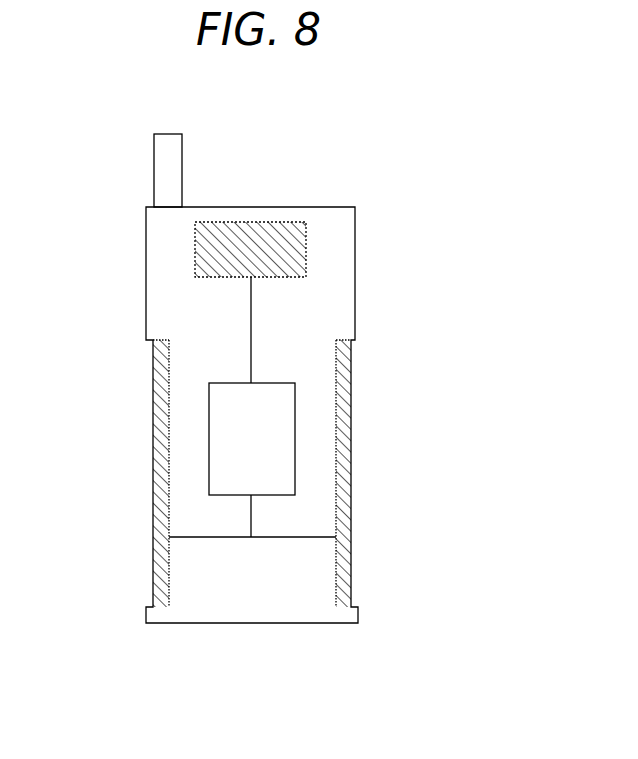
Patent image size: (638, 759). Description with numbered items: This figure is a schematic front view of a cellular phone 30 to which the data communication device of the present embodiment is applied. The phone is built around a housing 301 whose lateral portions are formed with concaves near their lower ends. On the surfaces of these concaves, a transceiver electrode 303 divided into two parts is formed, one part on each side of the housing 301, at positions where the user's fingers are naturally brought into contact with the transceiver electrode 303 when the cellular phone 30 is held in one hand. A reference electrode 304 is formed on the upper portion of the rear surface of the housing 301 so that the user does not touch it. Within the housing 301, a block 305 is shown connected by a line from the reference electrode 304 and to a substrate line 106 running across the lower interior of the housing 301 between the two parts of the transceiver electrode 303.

The cellular phone 30 is at (323, 193).
The housing 301 is at (353, 242).
The transceiver electrode 303 is at (152, 440).
The reference electrode 304 is at (250, 222).
The signal processing unit 305 is at (277, 383).
The substrate 106 is at (297, 537).